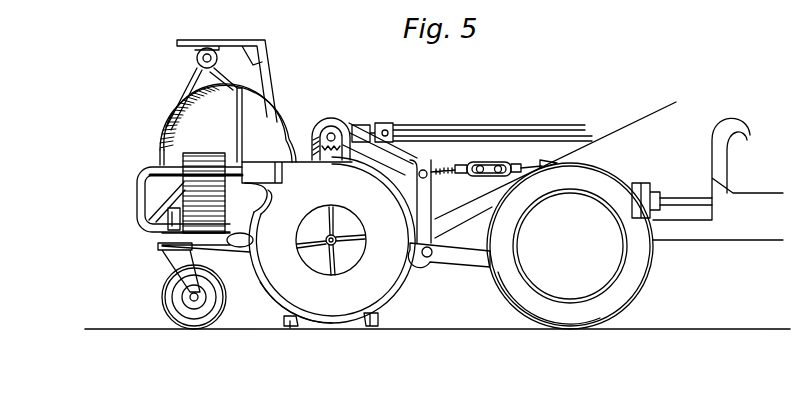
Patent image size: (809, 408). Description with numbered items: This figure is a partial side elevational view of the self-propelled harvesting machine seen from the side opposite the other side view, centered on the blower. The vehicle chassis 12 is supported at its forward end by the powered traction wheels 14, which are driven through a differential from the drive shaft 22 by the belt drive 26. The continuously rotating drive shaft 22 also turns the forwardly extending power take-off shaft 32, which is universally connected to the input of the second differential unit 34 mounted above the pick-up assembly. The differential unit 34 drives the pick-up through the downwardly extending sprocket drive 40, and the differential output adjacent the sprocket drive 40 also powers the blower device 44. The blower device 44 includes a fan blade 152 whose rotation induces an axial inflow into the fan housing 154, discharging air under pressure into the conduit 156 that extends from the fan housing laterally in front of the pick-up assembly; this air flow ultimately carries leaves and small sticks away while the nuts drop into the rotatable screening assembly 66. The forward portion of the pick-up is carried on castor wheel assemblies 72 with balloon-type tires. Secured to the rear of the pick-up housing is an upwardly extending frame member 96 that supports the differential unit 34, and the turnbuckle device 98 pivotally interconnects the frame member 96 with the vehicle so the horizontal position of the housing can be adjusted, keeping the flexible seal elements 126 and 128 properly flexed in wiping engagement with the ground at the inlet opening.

The vehicle chassis 12 is at (725, 241).
The powered traction wheels 14 is at (628, 287).
The drive shaft 22 is at (675, 199).
The belt drive 26 is at (634, 183).
The power take-off shaft 32 is at (450, 116).
The second differential unit 34 is at (353, 126).
The sprocket drive 40 is at (311, 150).
The blower device 44 is at (367, 285).
The rotatable screening assembly 66 is at (166, 103).
The castor wheel assemblies 72 is at (162, 257).
The upwardly extending frame member 96 is at (399, 161).
The turnbuckle device 98 is at (488, 158).
The flexible seal element 126 is at (372, 327).
The flexible seal element 128 is at (295, 328).
The fan blade 152 is at (303, 247).
The fan housing 154 is at (292, 286).
The conduit 156 is at (138, 193).